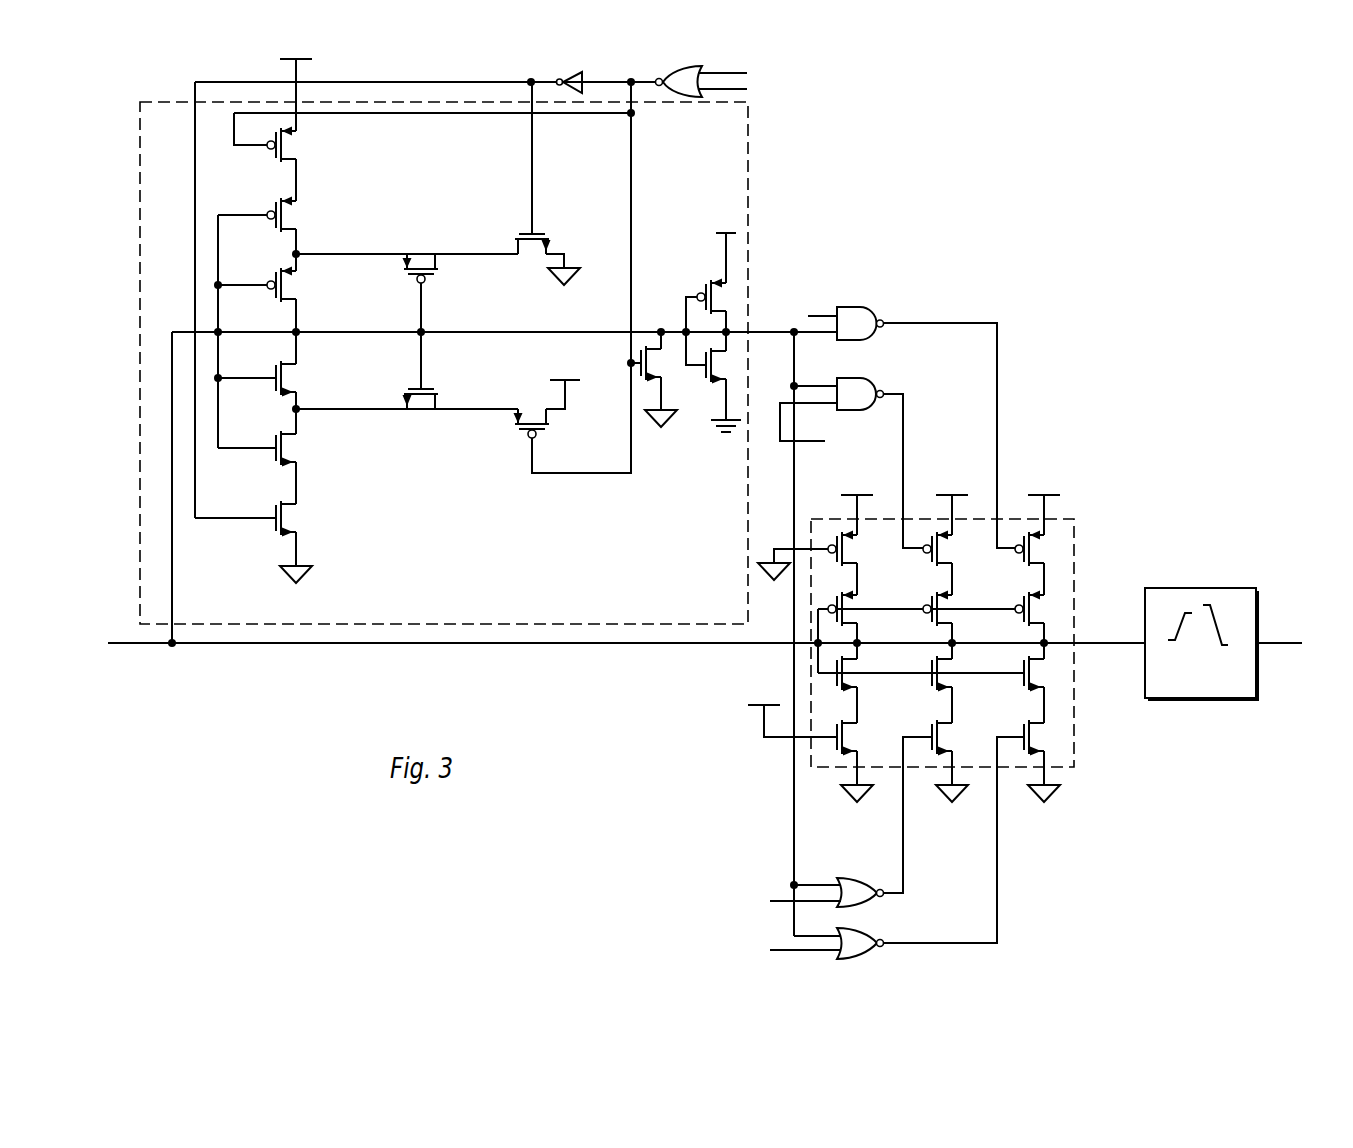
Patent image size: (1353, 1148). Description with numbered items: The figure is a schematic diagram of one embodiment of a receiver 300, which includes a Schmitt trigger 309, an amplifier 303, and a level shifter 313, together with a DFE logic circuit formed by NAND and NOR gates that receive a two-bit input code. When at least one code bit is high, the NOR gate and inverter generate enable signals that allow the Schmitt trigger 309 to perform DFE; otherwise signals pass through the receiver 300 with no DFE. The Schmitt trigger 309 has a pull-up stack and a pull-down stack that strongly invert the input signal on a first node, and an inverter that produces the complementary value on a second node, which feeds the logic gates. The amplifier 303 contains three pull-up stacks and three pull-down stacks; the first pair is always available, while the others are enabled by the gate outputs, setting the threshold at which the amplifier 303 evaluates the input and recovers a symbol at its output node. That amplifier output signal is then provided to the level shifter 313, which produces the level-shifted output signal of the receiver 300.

The receiver 300 is at (704, 500).
The Schmitt trigger 309 is at (752, 204).
The amplifier 303 is at (1078, 516).
The level shifter 313 is at (1202, 644).